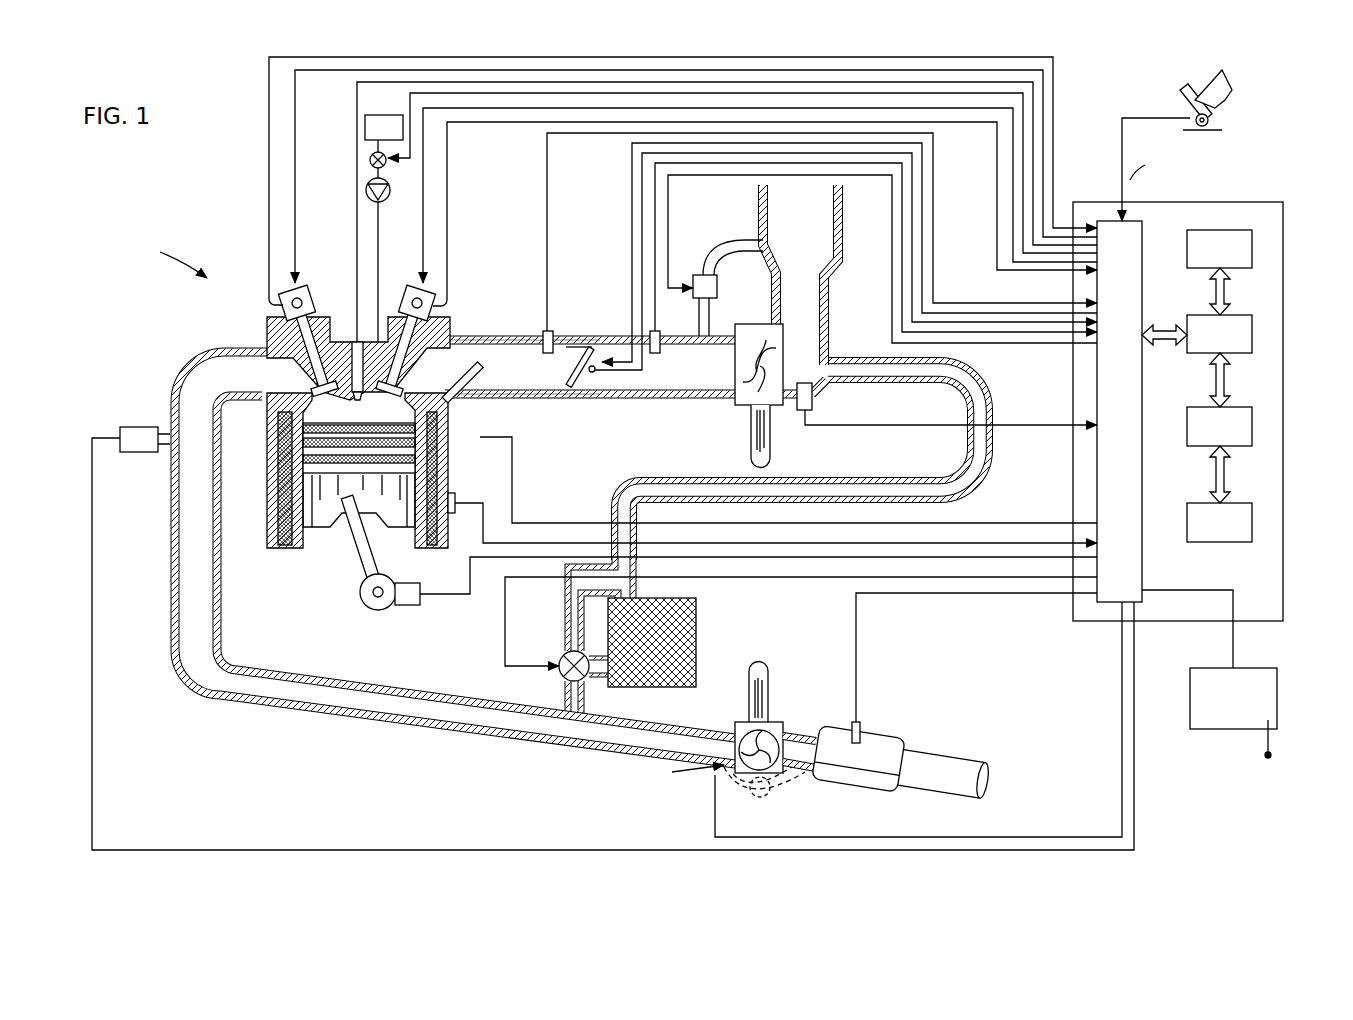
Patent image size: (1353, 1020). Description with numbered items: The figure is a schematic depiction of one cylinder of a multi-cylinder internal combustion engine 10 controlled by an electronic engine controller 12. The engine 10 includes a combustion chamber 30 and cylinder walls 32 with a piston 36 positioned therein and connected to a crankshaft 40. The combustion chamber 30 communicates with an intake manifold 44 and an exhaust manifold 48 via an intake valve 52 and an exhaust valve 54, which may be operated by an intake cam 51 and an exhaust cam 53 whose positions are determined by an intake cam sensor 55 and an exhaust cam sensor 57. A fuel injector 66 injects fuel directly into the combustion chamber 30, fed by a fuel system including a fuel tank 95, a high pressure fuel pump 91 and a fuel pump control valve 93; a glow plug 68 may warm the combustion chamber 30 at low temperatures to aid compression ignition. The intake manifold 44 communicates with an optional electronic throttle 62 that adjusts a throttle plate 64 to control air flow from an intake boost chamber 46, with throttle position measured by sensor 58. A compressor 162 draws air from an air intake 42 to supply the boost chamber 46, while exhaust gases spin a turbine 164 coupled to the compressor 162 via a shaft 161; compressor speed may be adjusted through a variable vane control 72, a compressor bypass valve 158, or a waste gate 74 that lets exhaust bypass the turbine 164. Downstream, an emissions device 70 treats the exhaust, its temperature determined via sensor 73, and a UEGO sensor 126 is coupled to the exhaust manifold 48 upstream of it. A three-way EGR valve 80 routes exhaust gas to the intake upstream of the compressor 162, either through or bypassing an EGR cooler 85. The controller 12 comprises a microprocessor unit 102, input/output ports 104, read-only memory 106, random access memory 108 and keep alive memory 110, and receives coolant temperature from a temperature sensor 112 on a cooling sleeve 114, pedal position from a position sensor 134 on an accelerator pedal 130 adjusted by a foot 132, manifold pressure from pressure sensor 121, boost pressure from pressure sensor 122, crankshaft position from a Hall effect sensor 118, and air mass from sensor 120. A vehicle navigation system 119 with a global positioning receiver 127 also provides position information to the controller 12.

The internal combustion engine 10 is at (171, 253).
The electronic engine controller 12 is at (1258, 202).
The combustion chamber 30 is at (356, 410).
The cylinder walls 32 is at (305, 530).
The piston 36 is at (348, 505).
The crankshaft 40 is at (370, 608).
The air intake 42 is at (800, 275).
The intake manifold 44 is at (522, 367).
The intake boost chamber 46 is at (712, 450).
The exhaust manifold 48 is at (455, 558).
The intake cam 51 is at (414, 290).
The intake valve 52 is at (394, 388).
The exhaust cam 53 is at (302, 290).
The exhaust valve 54 is at (318, 388).
The intake cam sensor 55 is at (436, 305).
The exhaust cam sensor 57 is at (284, 303).
The throttle position sensor 58 is at (596, 375).
The electronic throttle 62 is at (572, 345).
The throttle plate 64 is at (578, 345).
The fuel injector 66 is at (352, 368).
The glow plug 68 is at (769, 442).
The emissions device 70 is at (868, 778).
The variable vane control 72 is at (682, 777).
The sensor 73 is at (860, 722).
The waste gate 74 is at (770, 795).
The EGR valve 80 is at (566, 653).
The EGR cooler 85 is at (696, 632).
The high pressure fuel pump 91 is at (385, 200).
The fuel pump control valve 93 is at (384, 168).
The fuel tank 95 is at (384, 228).
The microprocessor unit 102 is at (1253, 329).
The input/output ports 104 is at (1145, 222).
The read-only memory 106 is at (1253, 244).
The random access memory 108 is at (1253, 421).
The keep alive memory 110 is at (1253, 515).
The temperature sensor 112 is at (472, 492).
The cooling sleeve 114 is at (290, 466).
The Hall effect sensor 118 is at (408, 607).
The vehicle navigation system 119 is at (1209, 659).
The air mass sensor 120 is at (812, 400).
The pressure sensor 121 is at (547, 330).
The pressure sensor 122 is at (672, 327).
The universal exhaust gas oxygen sensor 126 is at (122, 430).
The global positioning receiver 127 is at (1262, 748).
The accelerator pedal 130 is at (1187, 95).
The foot 132 is at (1232, 86).
The position sensor 134 is at (1212, 122).
The compressor bypass valve 158 is at (698, 275).
The shaft 161 is at (752, 440).
The compressor 162 is at (737, 405).
The turbine 164 is at (738, 722).